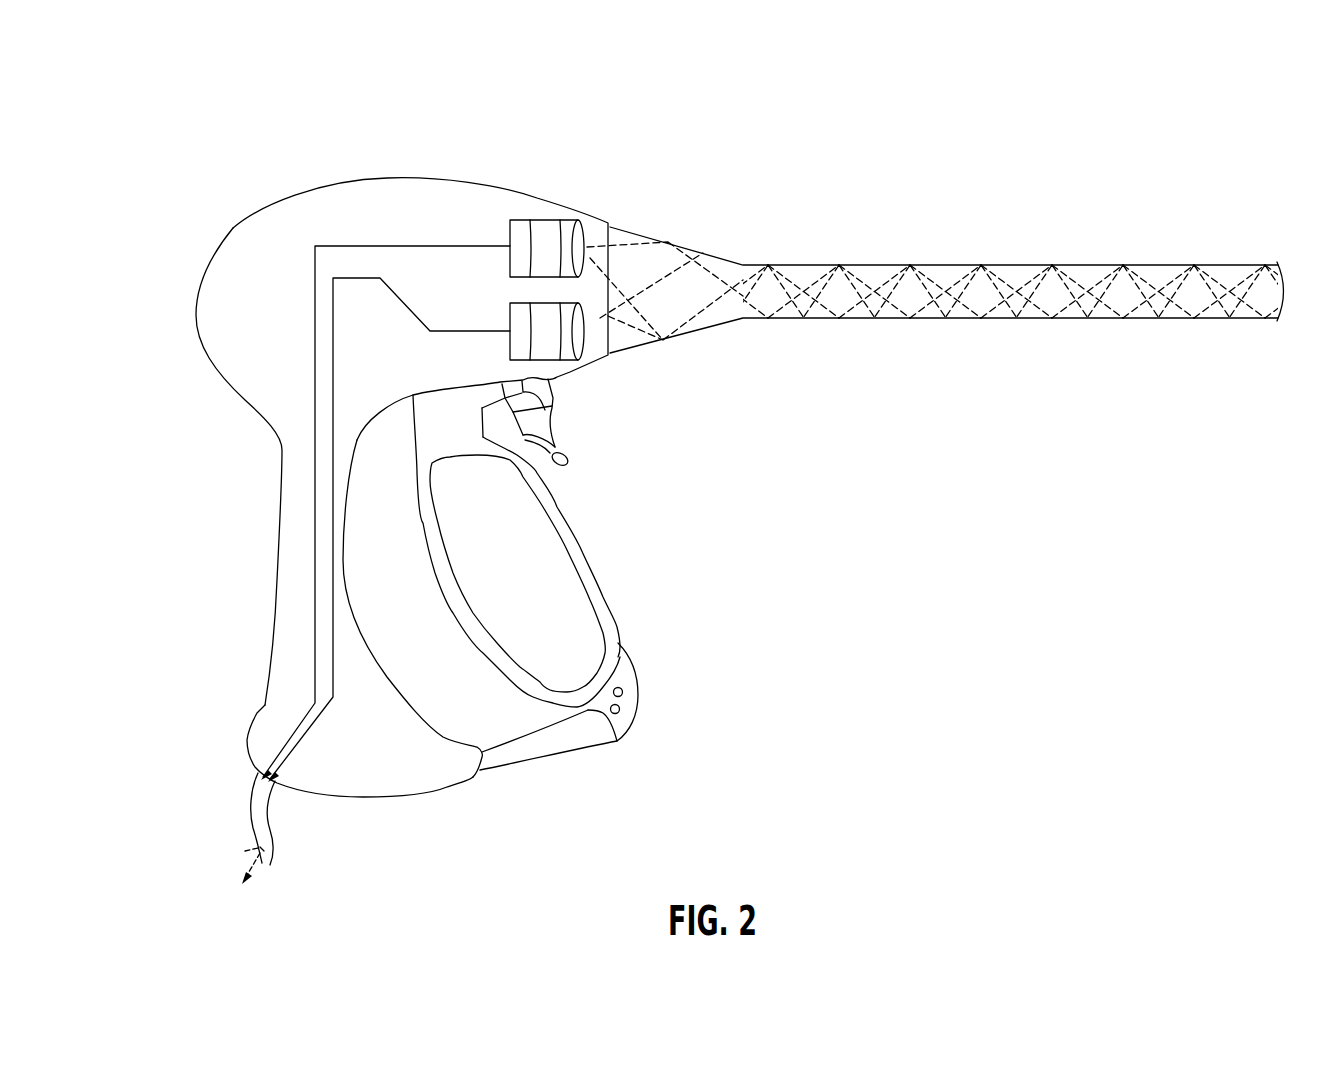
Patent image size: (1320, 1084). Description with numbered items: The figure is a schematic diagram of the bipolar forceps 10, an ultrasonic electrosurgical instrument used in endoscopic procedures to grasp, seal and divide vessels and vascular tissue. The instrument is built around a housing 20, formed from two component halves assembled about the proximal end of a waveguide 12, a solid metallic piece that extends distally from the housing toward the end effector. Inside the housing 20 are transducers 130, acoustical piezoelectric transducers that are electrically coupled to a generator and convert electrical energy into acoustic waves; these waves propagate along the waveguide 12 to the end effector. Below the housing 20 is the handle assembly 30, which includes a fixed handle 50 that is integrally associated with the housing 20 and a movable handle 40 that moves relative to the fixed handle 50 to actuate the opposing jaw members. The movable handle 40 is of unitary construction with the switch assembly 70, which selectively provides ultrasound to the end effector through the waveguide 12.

The bipolar forceps 10 is at (862, 94).
The waveguide 12 is at (1120, 265).
The housing 20 is at (392, 178).
The handle assembly 30 is at (604, 521).
The movable handle 40 is at (598, 587).
The fixed handle 50 is at (387, 797).
The switch assembly 70 is at (558, 445).
The transducers 130 is at (547, 218).